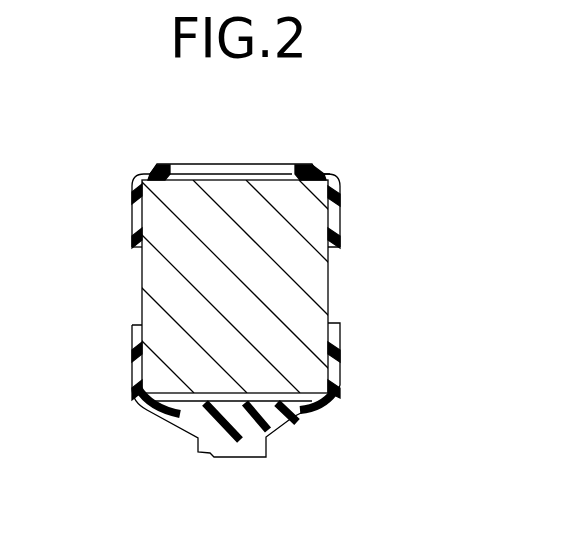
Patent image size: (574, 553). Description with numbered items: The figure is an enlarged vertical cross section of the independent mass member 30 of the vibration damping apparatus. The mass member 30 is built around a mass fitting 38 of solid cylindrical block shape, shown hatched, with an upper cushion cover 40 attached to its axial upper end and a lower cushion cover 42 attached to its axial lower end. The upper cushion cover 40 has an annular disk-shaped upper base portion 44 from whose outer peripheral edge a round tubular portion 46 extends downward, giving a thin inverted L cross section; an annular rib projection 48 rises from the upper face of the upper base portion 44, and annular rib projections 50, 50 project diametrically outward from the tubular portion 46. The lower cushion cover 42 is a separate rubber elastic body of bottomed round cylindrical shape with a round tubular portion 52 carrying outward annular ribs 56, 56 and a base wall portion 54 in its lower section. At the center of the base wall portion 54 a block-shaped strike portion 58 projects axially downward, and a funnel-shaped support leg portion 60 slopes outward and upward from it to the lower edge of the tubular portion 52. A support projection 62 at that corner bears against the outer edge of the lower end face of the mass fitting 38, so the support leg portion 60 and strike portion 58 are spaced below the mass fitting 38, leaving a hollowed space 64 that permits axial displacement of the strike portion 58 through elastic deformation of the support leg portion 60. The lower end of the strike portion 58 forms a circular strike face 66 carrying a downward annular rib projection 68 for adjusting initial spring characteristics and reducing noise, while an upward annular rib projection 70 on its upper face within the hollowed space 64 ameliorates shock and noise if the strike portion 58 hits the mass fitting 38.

The mass member 30 is at (386, 125).
The mass fitting 38 is at (292, 290).
The upper cushion cover 40 is at (299, 148).
The lower cushion cover 42 is at (348, 322).
The upper base portion 44 is at (147, 173).
The tubular portion 46 is at (340, 205).
The annular rib projection 48 is at (160, 168).
The annular rib projections 50 is at (132, 198).
The tubular portion 52 is at (342, 336).
The base wall portion 54 is at (300, 430).
The annular ribs 56 is at (132, 346).
The strike portion 58 is at (220, 440).
The support leg portion 60 is at (307, 415).
The support projection 62 is at (318, 402).
The hollowed space 64 is at (158, 410).
The strike face 66 is at (268, 455).
The annular rib projection 68 is at (243, 458).
The annular rib projection 70 is at (252, 405).